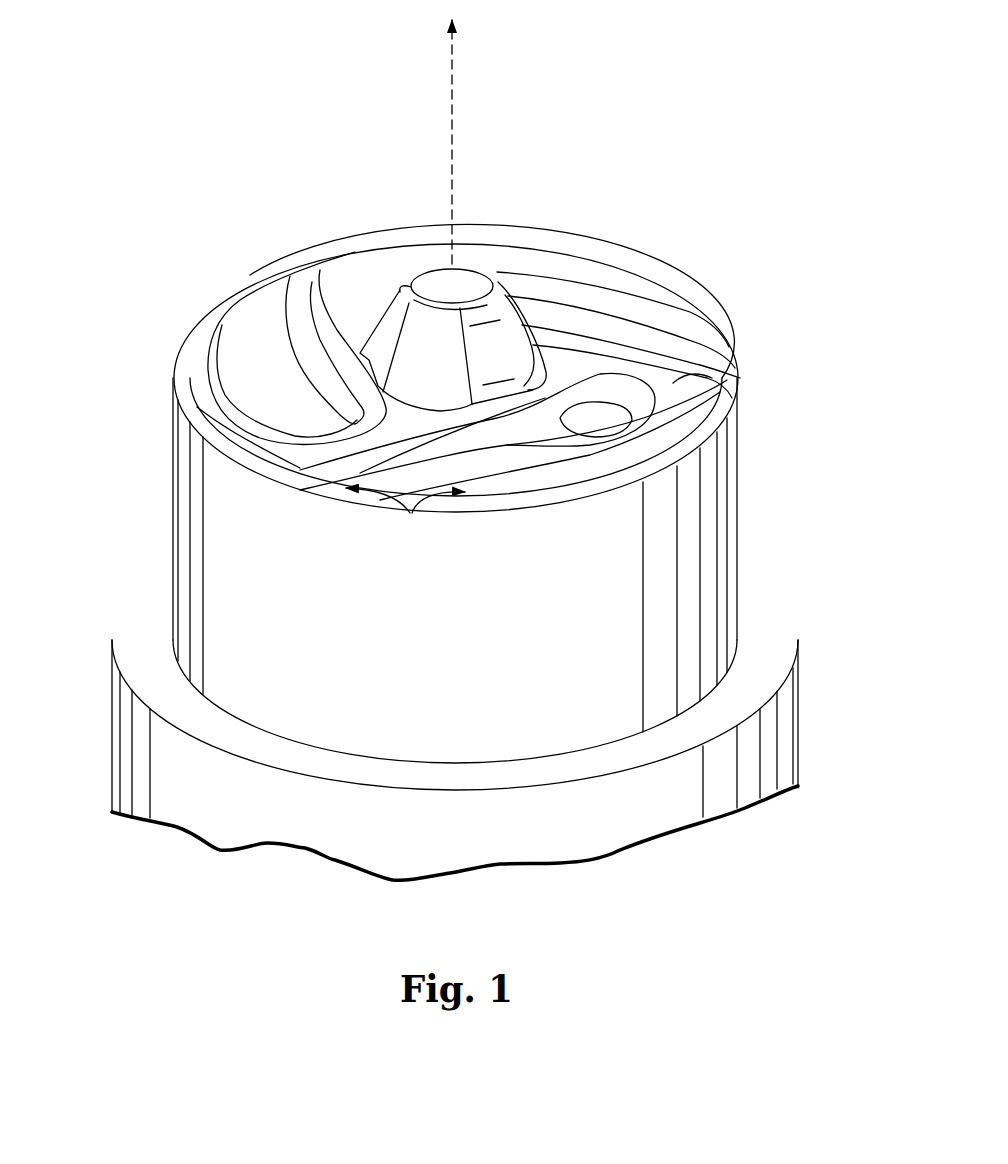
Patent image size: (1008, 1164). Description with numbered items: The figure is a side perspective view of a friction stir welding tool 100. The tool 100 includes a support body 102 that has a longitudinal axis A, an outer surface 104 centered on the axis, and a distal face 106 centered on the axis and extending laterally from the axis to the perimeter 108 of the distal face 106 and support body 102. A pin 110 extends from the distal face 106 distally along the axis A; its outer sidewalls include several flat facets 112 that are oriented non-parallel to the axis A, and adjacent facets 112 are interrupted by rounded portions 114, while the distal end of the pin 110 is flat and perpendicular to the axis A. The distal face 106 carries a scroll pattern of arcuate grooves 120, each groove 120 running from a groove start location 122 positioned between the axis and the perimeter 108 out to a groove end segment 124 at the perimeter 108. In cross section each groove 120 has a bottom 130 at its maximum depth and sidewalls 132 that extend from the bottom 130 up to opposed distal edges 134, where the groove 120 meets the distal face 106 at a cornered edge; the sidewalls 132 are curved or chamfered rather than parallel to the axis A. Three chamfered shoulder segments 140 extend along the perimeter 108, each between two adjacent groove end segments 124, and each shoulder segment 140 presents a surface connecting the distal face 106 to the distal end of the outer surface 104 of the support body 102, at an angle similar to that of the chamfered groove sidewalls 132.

The tool 100 is at (178, 880).
The support body 102 is at (150, 520).
The outer surface 104 is at (528, 653).
The distal face 106 is at (673, 383).
The perimeter 108 is at (178, 328).
The pin 110 is at (470, 225).
The facets 112 is at (503, 365).
The rounded portions 114 is at (443, 367).
The grooves 120 is at (578, 312).
The groove start location 122 is at (600, 397).
The bottom 130 is at (258, 295).
The sidewalls 132 is at (410, 513).
The distal edges 134 is at (527, 258).
The chamfered shoulder segments 140 is at (572, 258).
The groove end segment 124 is at (752, 367).
The longitudinal axis A is at (452, 78).